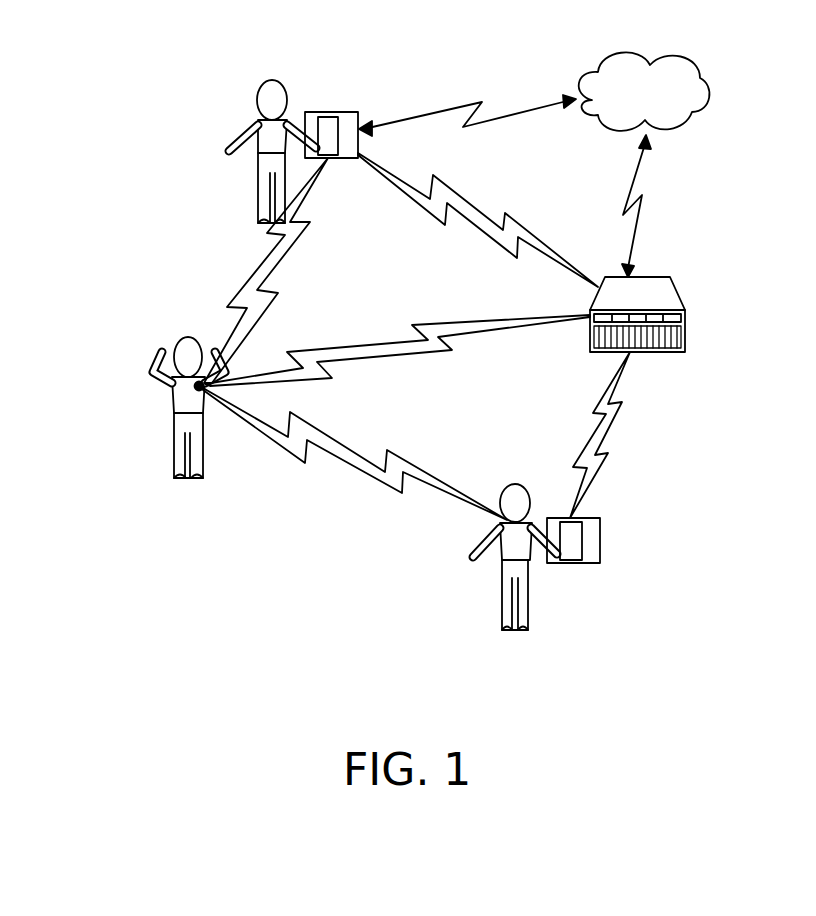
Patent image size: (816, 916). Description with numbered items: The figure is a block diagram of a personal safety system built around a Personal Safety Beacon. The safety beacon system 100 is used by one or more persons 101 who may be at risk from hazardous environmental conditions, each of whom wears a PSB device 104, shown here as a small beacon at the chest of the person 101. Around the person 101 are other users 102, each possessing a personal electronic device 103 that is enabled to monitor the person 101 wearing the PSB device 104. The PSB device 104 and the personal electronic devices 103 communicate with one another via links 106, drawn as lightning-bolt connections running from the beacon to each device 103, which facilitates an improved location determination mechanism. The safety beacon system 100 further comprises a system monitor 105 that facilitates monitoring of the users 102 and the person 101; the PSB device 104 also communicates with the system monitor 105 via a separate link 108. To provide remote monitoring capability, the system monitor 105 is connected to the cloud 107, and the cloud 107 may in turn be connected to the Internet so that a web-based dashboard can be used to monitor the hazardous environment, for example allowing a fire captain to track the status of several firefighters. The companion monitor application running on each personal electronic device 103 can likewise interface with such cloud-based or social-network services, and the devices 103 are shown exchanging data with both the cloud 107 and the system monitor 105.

The safety beacon system 100 is at (181, 560).
The person 101 is at (165, 378).
The users 102 is at (258, 122).
The personal electronic devices 103 is at (342, 112).
The PSB device 104 is at (203, 392).
The system monitor 105 is at (645, 285).
The links 106 is at (253, 283).
The cloud 107 is at (657, 106).
The link 108 is at (374, 348).